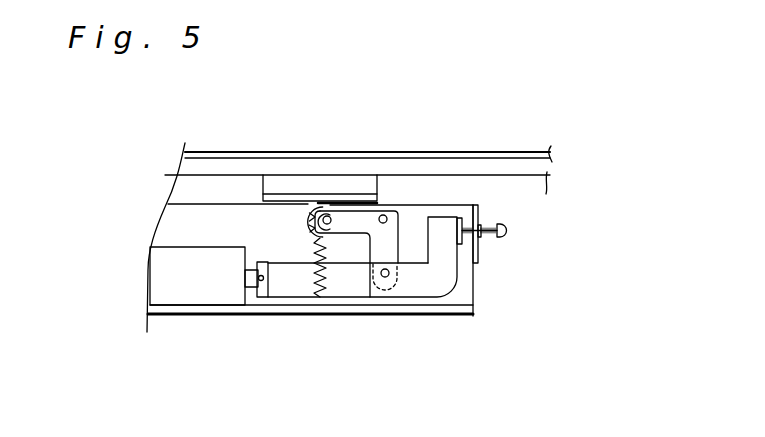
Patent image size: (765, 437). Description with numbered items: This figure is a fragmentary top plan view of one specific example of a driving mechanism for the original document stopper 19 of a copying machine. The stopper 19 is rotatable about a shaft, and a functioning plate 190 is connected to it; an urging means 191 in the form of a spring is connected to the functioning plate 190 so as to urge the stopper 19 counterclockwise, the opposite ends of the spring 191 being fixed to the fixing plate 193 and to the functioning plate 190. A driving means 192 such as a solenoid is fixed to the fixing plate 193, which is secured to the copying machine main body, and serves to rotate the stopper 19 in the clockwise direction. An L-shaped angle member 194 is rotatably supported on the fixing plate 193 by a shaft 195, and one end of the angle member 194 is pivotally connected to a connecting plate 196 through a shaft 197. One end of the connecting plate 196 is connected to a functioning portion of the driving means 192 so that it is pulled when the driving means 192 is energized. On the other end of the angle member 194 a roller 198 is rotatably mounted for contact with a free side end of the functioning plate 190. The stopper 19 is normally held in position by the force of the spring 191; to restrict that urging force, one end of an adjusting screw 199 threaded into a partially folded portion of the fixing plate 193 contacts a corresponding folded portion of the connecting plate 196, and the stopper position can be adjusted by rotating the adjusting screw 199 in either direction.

The original document stopper 19 is at (505, 151).
The functioning plate 190 is at (362, 197).
The urging means 191 is at (316, 244).
The driving means 192 is at (188, 292).
The fixing plate 193 is at (460, 316).
The L-shaped angle member 194 is at (362, 222).
The shaft 195 is at (388, 212).
The connecting plate 196 is at (425, 283).
The shaft 197 is at (385, 278).
The roller 198 is at (300, 207).
The adjusting screw 199 is at (488, 238).